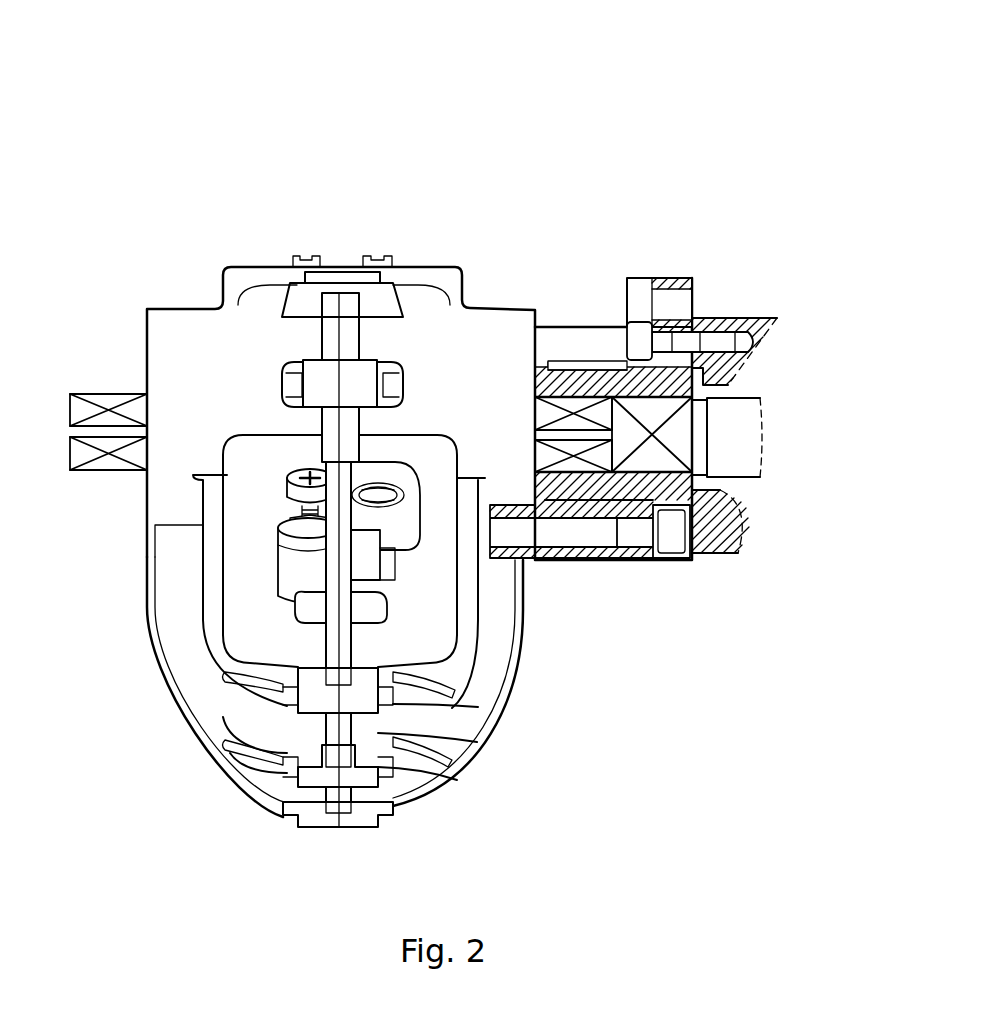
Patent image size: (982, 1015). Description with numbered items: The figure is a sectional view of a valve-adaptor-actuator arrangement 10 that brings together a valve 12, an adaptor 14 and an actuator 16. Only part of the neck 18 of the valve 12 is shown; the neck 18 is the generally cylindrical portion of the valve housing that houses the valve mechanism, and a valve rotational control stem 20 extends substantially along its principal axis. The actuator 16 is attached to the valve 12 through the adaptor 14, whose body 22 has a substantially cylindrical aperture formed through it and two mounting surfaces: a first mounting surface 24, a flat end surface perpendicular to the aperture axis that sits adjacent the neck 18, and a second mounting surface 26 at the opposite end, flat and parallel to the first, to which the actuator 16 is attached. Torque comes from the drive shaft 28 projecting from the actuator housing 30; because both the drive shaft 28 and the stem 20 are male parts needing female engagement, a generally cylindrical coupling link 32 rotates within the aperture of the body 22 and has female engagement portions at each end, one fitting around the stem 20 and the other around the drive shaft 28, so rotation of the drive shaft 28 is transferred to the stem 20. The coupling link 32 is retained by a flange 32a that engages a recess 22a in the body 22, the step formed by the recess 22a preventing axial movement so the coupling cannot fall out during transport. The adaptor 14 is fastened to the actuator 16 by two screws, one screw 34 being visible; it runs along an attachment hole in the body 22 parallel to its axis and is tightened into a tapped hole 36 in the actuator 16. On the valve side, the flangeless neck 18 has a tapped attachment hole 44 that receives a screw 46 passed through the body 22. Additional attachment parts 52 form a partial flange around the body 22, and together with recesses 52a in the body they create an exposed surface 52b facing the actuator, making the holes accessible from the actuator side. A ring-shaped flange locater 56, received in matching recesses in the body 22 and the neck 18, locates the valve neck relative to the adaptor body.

The arrangement 10 is at (443, 104).
The valve 12 is at (722, 670).
The adaptor 14 is at (588, 622).
The actuator 16 is at (168, 298).
The neck 18 is at (796, 278).
The valve rotational control stem 20 is at (790, 440).
The body 22 is at (616, 574).
The recess 22a is at (578, 367).
The first mounting surface 24 is at (700, 322).
The second mounting surface 26 is at (535, 382).
The drive shaft 28 is at (550, 416).
The actuator housing 30 is at (452, 280).
The coupling link 32 is at (580, 366).
The flange 32a is at (546, 365).
The screw 34 is at (555, 540).
The tapped hole 36 is at (484, 528).
The attachment hole 44 is at (758, 335).
The screw 46 is at (627, 340).
The attachment part 52 is at (666, 278).
The recess 52a is at (584, 385).
The exposed surface 52b is at (627, 300).
The flange locater 56 is at (708, 506).